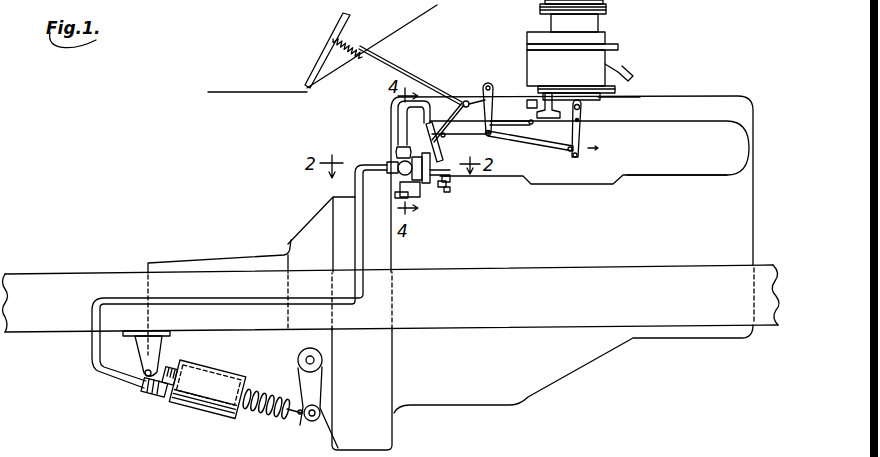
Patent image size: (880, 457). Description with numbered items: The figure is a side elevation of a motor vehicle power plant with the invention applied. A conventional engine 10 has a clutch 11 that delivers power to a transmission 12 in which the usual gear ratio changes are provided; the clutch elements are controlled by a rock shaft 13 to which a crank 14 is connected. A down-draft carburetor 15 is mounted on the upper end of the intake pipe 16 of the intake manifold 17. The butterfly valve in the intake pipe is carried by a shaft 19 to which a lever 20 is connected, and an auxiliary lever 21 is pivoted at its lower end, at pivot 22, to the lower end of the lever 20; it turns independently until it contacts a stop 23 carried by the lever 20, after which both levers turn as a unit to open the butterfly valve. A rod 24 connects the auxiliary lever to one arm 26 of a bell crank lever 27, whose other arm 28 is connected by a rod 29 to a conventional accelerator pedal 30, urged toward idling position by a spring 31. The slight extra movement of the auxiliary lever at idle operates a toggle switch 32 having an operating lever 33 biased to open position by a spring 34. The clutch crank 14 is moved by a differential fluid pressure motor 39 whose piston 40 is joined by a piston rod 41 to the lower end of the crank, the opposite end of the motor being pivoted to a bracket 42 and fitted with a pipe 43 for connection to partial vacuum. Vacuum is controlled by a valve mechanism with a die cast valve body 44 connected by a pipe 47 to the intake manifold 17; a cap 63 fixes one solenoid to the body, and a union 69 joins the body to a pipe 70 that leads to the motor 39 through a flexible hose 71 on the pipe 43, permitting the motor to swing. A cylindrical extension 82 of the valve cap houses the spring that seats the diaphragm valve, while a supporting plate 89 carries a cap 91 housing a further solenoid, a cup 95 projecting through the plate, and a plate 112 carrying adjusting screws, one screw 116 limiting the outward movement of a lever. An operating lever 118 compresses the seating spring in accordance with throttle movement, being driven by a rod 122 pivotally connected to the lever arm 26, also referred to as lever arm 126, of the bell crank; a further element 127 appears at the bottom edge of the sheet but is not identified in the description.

The engine 10 is at (680, 96).
The clutch 11 is at (312, 212).
The transmission 12 is at (208, 262).
The rock shaft 13 is at (316, 357).
The crank 14 is at (314, 388).
The carburetor 15 is at (620, 47).
The intake pipe 16 is at (600, 112).
The intake manifold 17 is at (677, 164).
The shaft 19 is at (577, 103).
The lever 20 is at (608, 142).
The auxiliary lever 21 is at (568, 151).
The pivot 22 is at (578, 157).
The stop 23 is at (580, 124).
The rod 24 is at (552, 143).
The arm 26 is at (510, 112).
The bell crank lever 27 is at (487, 83).
The arm 28 is at (464, 99).
The rod 29 is at (407, 75).
The accelerator pedal 30 is at (343, 13).
The spring 31 is at (345, 40).
The switch 32 is at (528, 102).
The operating lever 33 is at (530, 124).
The spring 34 is at (548, 105).
The motor 39 is at (215, 418).
The piston 40 is at (235, 372).
The piston rod 41 is at (299, 420).
The bracket 42 is at (160, 352).
The pipe 43 is at (167, 393).
The valve body 44 is at (397, 151).
The pipe 47 is at (392, 104).
The cap 63 is at (400, 173).
The union 69 is at (387, 166).
The pipe 70 is at (364, 260).
The flexible hose 71 is at (150, 392).
The cylindrical extension 82 is at (427, 142).
The supporting plate 89 is at (415, 197).
The cap 91 is at (398, 195).
The cup 95 is at (449, 192).
The plate 112 is at (445, 186).
The screw 116 is at (450, 180).
The operating lever 118 is at (456, 122).
The rod 122 is at (446, 136).
The lever arm 126 is at (646, 449).
The element (partially shown) 127 is at (749, 449).